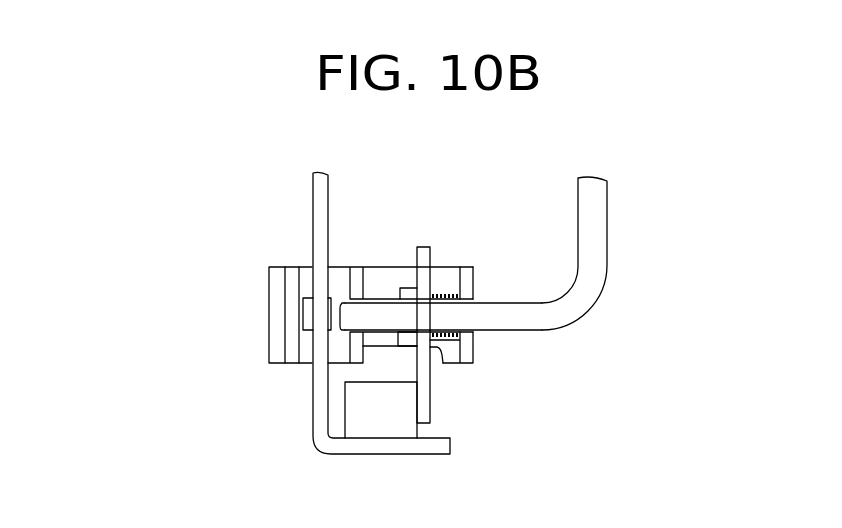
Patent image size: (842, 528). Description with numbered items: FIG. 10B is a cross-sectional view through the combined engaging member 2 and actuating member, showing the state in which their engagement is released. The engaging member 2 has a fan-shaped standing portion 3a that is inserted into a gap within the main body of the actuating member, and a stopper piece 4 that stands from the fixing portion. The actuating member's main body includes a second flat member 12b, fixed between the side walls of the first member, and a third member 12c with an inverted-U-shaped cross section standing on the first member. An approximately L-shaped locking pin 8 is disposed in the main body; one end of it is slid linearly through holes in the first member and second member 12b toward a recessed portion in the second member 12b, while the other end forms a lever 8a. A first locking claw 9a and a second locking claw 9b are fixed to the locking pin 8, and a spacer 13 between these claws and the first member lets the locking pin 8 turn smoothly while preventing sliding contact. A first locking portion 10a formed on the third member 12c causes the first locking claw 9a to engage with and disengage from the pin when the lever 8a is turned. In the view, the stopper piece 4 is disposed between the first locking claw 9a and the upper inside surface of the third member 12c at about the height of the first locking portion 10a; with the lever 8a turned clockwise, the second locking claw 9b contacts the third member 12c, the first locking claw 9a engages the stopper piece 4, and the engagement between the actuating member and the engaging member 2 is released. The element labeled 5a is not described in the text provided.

The engaging member 2 is at (278, 206).
The standing portion 3a is at (320, 200).
The stopper piece 4 is at (375, 423).
The clip 5a is at (320, 328).
The locking pin 8 is at (498, 320).
The lever 8a is at (595, 222).
The first locking claw 9a is at (428, 400).
The second locking claw 9b is at (423, 248).
The first locking portion 10a is at (435, 360).
The second member 12b is at (305, 358).
The third member 12c is at (468, 278).
The spacer 13 is at (408, 290).